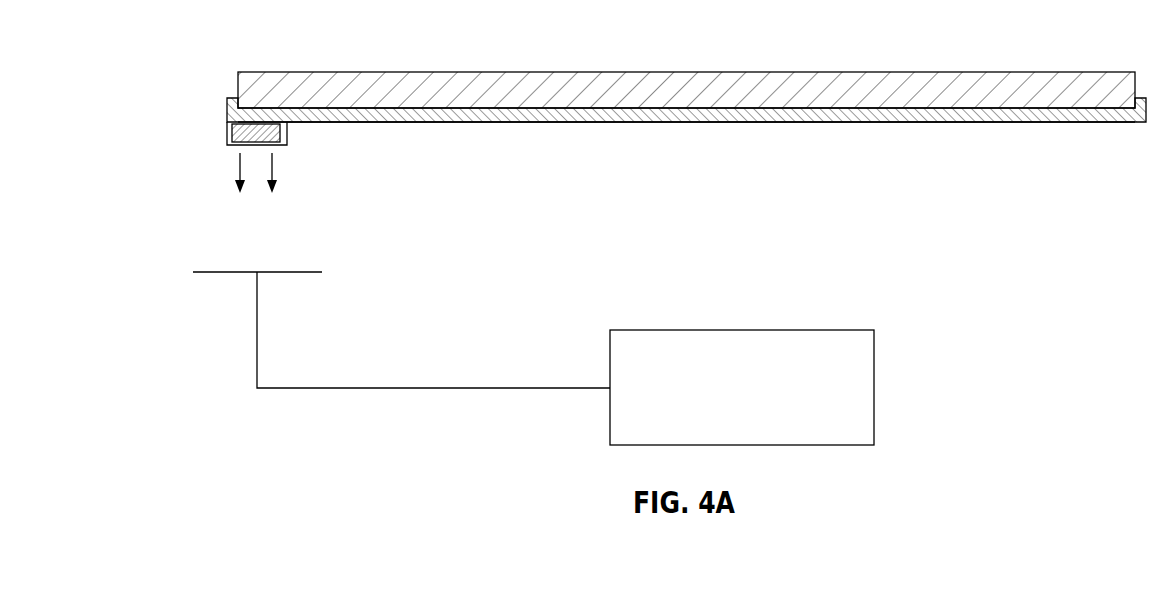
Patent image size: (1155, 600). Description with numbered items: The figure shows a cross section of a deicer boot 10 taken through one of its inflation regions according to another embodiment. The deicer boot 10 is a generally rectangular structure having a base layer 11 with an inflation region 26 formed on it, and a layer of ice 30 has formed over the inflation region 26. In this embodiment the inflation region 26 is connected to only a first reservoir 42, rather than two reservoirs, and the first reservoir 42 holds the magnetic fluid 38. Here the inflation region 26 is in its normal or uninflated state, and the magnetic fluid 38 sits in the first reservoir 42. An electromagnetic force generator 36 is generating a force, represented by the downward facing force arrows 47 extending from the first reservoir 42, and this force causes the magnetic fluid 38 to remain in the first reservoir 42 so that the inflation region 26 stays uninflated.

The deicer boot 10 is at (649, 101).
The layer of ice 30 is at (738, 72).
The inflation region 26 is at (686, 147).
The base layer 11 is at (573, 122).
The first reservoir 42 is at (227, 133).
The magnetic fluid 38 is at (282, 128).
The force arrows 47 is at (236, 176).
The electromagnetic force generator 36 is at (756, 402).